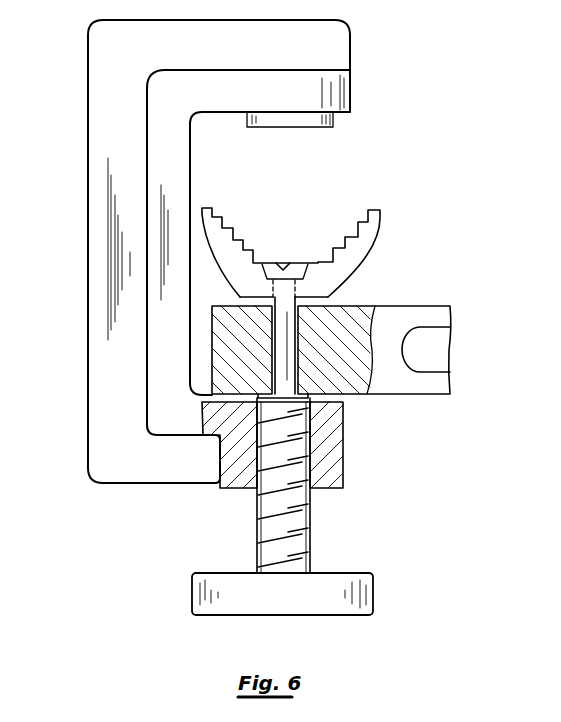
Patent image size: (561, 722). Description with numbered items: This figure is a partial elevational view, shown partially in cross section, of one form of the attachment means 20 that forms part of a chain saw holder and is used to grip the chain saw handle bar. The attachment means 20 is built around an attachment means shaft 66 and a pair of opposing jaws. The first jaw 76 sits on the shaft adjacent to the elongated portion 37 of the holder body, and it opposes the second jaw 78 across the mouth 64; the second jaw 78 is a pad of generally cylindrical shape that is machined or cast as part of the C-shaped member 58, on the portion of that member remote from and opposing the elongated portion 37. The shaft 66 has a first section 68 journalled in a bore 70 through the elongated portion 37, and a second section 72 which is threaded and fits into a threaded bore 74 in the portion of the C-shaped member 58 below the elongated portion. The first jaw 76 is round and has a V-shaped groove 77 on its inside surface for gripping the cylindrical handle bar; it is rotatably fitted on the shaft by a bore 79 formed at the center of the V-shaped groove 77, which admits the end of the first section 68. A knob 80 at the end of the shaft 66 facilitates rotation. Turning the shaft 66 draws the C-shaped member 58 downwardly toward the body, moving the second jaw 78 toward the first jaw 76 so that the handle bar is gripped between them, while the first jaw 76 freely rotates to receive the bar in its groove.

The attachment means 20 is at (407, 80).
The C-shaped member 58 is at (102, 278).
The second jaw 78 is at (337, 122).
The mouth 64 is at (310, 163).
The first jaw 76 is at (377, 223).
The V-shaped groove 77 is at (281, 252).
The bore 79 is at (303, 287).
The first section 68 is at (282, 362).
The elongated portion 37 is at (437, 350).
The bore 70 is at (302, 373).
The attachment means shaft 66 is at (328, 528).
The second section 72 is at (270, 520).
The threaded bore 74 is at (267, 458).
The knob 80 is at (355, 592).